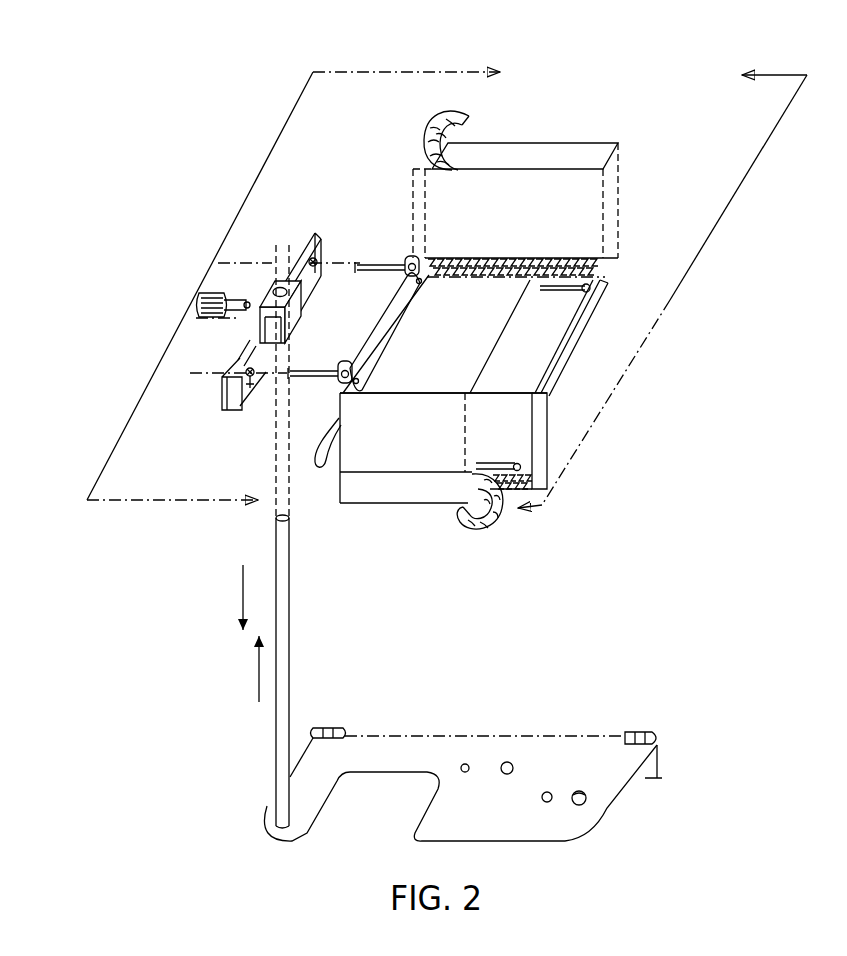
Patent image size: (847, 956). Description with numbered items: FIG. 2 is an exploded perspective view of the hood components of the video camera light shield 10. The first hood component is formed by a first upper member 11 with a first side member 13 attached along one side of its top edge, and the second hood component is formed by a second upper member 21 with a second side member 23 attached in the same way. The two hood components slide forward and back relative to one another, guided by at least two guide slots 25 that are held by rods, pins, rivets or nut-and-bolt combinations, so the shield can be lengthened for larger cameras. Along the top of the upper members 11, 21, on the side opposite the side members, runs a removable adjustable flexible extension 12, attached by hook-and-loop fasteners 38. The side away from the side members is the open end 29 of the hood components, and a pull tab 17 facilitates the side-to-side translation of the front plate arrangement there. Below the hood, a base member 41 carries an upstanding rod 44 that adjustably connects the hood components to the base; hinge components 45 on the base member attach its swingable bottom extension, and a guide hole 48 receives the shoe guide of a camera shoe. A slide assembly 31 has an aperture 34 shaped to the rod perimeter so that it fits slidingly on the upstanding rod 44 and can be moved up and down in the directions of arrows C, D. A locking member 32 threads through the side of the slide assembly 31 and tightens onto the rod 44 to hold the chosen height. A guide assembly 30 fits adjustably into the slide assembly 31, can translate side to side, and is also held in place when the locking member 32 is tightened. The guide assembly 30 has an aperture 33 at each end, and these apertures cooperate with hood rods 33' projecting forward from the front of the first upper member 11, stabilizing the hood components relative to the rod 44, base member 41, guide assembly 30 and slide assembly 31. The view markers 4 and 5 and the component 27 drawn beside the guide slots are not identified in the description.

The section line 4- 4 is at (293, 288).
The section line 5- 5 is at (678, 297).
The direction arrow C is at (244, 583).
The direction arrow D is at (261, 687).
The video camera light shield 10 is at (236, 201).
The first upper member 11 is at (447, 346).
The removable adjustable flexible extension 12 is at (555, 146).
The first side member 13 is at (428, 442).
The pull tab 17 is at (322, 468).
The second upper member 21 is at (541, 357).
The second side member 23 is at (507, 440).
The guide slot 25 is at (580, 297).
The guide rail 27 is at (625, 253).
The open end 29 is at (628, 275).
The guide assembly 30 is at (319, 231).
The slide assembly 31 is at (296, 311).
The locking member 32 is at (194, 300).
The aperture 33 is at (292, 337).
The hood rod 33' is at (355, 302).
The aperture 34 is at (282, 279).
The hook-and-loop fastener 38 is at (470, 137).
The base member 41 is at (500, 817).
The upstanding rod 44 is at (296, 669).
The hinge component 45 is at (341, 724).
The guide hole 48 is at (643, 782).